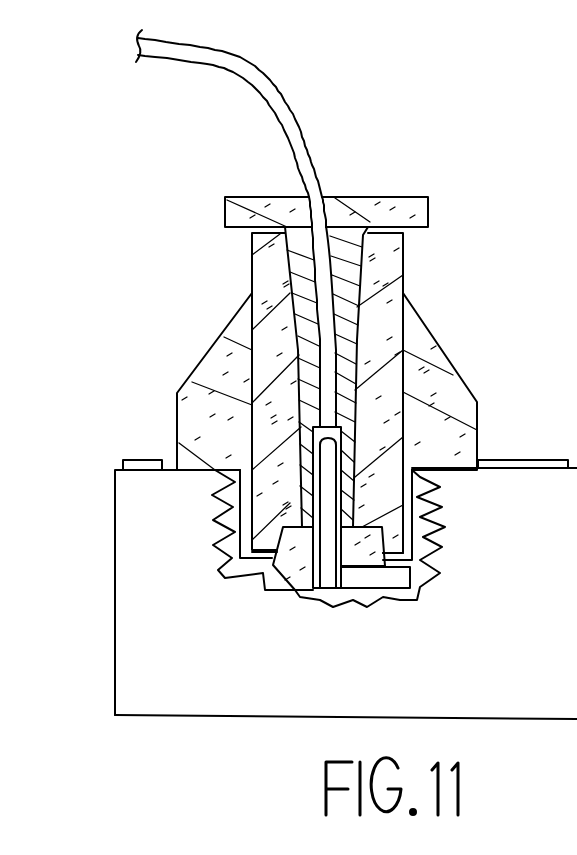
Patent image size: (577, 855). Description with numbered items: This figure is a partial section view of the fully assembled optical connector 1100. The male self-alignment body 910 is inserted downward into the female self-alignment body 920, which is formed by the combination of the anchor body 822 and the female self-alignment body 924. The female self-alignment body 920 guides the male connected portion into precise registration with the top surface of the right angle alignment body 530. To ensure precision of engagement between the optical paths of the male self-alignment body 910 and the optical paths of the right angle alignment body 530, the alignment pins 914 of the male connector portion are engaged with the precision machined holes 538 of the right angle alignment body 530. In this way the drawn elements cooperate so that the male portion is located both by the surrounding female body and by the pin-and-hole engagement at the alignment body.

The fully assembled optical connector 1100 is at (198, 268).
The male self-alignment body 910 is at (382, 198).
The female self-alignment body 924 is at (402, 252).
The female self-alignment body 920 is at (436, 333).
The anchor body 822 is at (178, 396).
The precision machined holes 538 is at (245, 536).
The alignment pins 914 is at (328, 592).
The right angle alignment body 530 is at (372, 600).